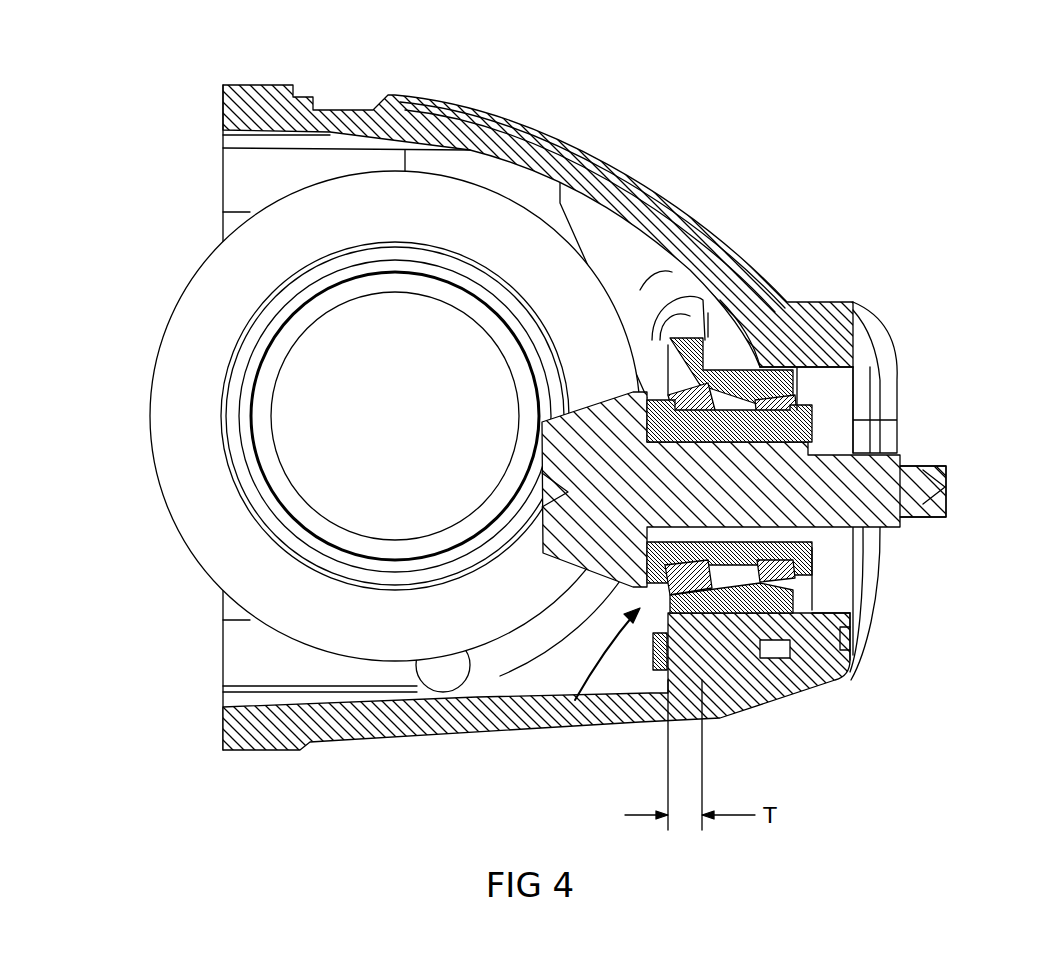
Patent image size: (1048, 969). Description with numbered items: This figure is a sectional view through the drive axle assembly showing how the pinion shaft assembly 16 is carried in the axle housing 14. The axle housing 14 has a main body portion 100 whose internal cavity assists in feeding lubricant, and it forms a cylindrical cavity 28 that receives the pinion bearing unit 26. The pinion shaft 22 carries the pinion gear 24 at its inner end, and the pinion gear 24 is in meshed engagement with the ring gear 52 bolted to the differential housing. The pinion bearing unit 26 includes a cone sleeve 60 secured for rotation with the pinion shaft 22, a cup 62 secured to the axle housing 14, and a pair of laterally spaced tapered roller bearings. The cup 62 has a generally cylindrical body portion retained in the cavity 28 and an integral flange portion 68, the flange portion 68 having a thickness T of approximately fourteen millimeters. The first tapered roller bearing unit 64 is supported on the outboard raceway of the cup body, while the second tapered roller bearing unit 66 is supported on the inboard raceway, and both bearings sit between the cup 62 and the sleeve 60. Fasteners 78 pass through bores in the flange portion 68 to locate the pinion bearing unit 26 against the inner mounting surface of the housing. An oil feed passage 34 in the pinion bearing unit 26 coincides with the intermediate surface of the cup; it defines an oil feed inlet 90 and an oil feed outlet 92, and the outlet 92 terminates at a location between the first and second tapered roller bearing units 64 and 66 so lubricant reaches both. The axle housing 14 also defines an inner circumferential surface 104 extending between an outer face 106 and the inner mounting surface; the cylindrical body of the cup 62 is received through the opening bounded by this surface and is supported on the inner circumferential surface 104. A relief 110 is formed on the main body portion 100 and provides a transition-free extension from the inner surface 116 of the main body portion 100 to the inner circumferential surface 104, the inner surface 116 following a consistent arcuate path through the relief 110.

The axle housing 14 is at (403, 106).
The ring gear 52 is at (212, 298).
The inner surface 116 is at (668, 240).
The flange portion 68 is at (666, 345).
The relief 110 is at (747, 380).
The oil feed passage 34 is at (740, 330).
The oil feed inlet 90 is at (762, 370).
The oil feed outlet 92 is at (812, 418).
The sleeve 60 is at (805, 438).
The pinion shaft 22 is at (890, 486).
The second tapered roller bearing unit 66 is at (678, 380).
The pinion gear 24 is at (556, 440).
The first tapered roller bearing unit 64 is at (797, 552).
The inner circumferential surface 104 is at (828, 612).
The outer face 106 is at (855, 618).
The cup 62 is at (800, 620).
The pinion bearing unit 26 is at (754, 615).
The cylindrical cavity 28 is at (727, 600).
The fasteners 78 is at (656, 652).
The pinion shaft assembly 16 is at (575, 700).
The main body portion 100 is at (277, 700).